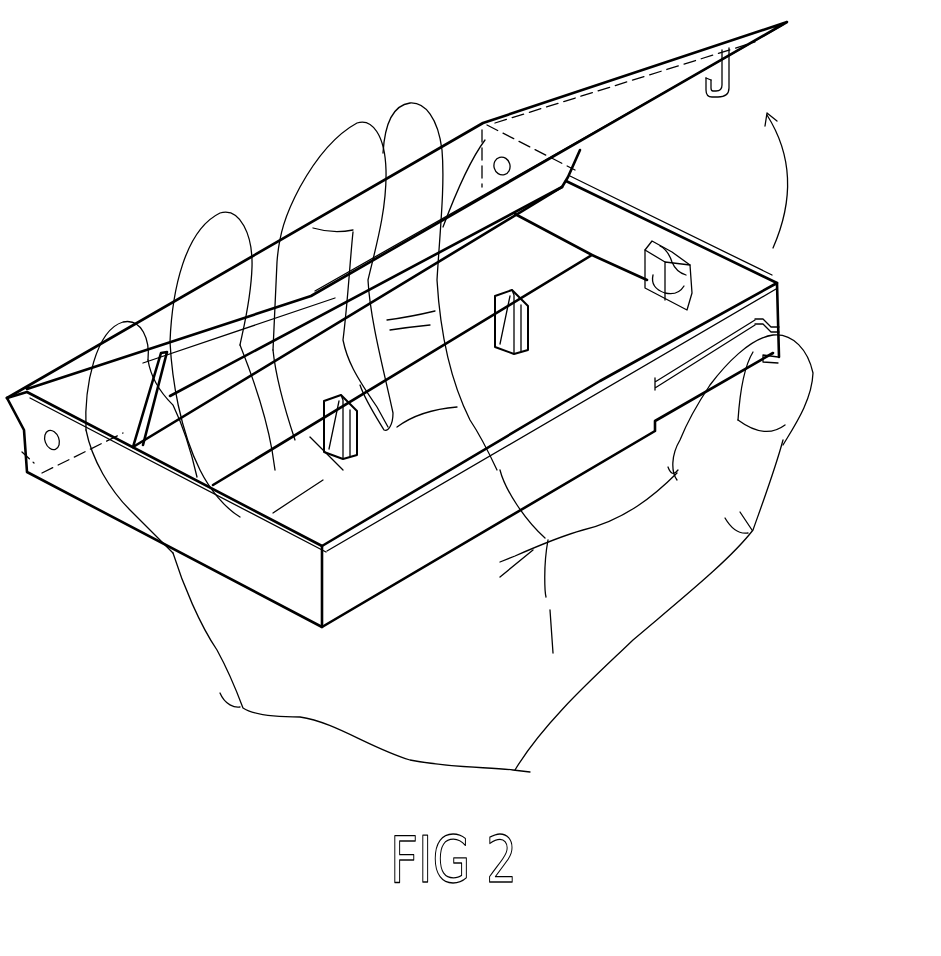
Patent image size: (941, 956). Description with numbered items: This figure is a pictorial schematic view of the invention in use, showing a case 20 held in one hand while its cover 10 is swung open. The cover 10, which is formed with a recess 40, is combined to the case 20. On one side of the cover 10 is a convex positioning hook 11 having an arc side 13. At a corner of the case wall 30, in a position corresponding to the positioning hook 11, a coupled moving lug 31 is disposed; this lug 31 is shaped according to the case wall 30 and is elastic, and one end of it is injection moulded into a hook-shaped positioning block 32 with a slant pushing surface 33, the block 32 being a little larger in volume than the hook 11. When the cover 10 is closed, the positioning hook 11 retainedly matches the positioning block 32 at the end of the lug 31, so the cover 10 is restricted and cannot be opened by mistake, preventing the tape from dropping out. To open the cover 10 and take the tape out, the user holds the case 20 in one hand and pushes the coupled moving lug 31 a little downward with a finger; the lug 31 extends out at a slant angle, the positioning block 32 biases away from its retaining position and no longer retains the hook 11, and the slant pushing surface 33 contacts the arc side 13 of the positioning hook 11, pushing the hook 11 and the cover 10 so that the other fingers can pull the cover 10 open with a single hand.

The cover 10 is at (540, 115).
The positioning hook 11 is at (710, 93).
The arc side 13 is at (730, 80).
The case 20 is at (597, 287).
The case wall 30 is at (780, 283).
The coupled moving lug 31 is at (795, 336).
The positioning block 32 is at (667, 253).
The slant pushing surface 33 is at (690, 263).
The recess 40 is at (573, 173).